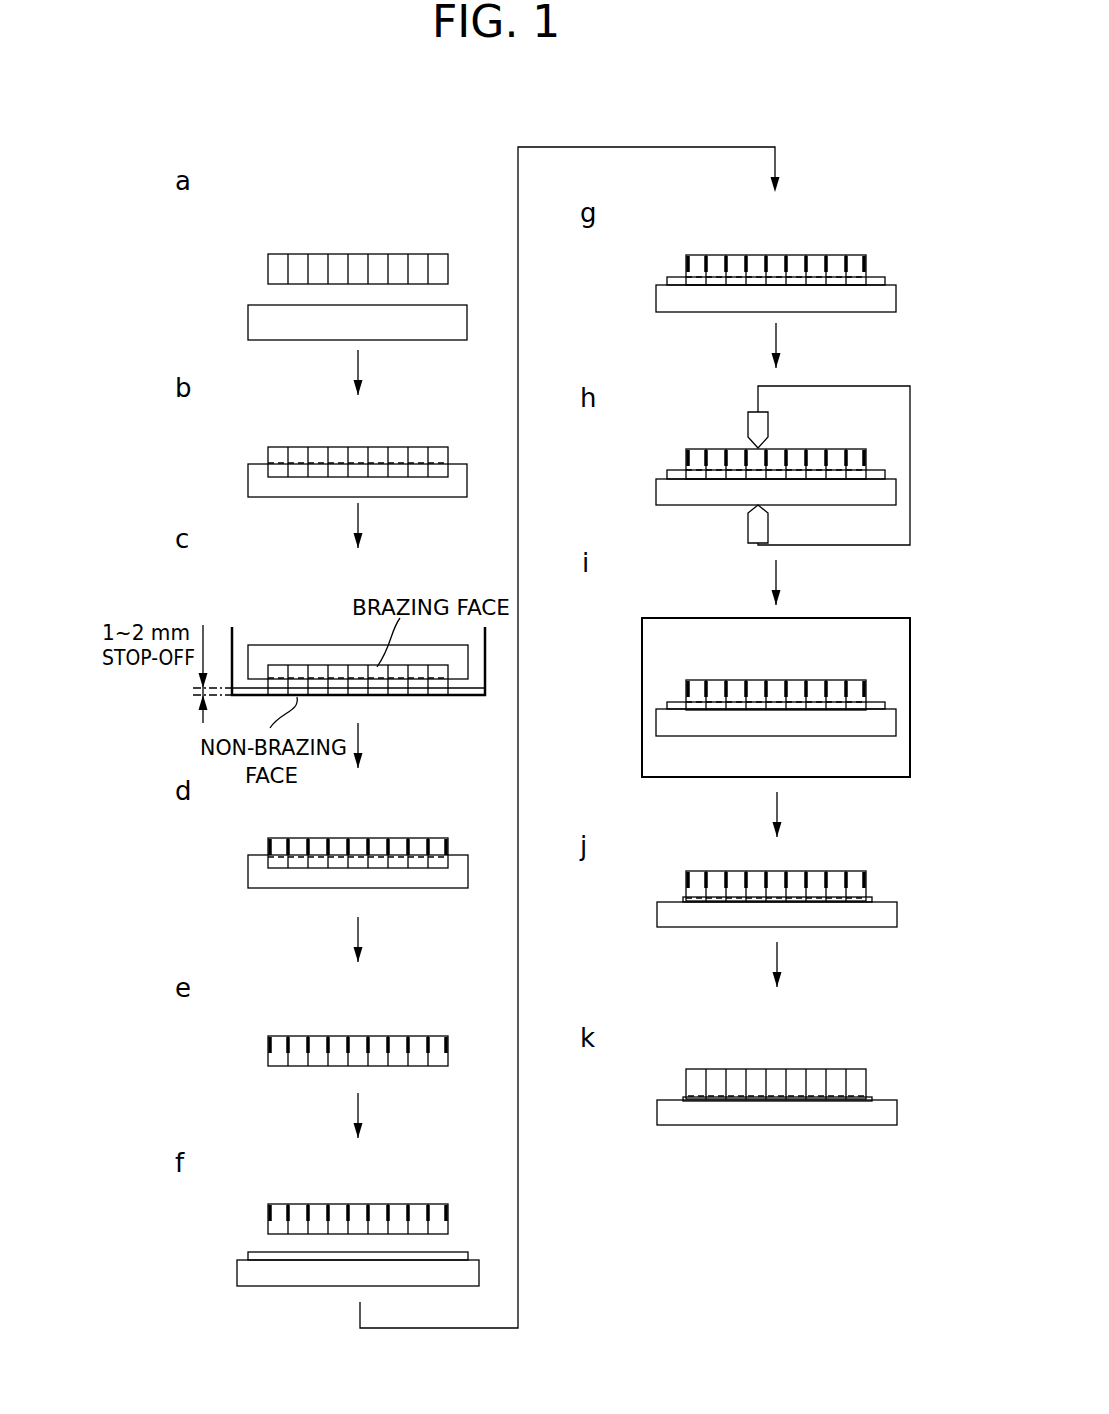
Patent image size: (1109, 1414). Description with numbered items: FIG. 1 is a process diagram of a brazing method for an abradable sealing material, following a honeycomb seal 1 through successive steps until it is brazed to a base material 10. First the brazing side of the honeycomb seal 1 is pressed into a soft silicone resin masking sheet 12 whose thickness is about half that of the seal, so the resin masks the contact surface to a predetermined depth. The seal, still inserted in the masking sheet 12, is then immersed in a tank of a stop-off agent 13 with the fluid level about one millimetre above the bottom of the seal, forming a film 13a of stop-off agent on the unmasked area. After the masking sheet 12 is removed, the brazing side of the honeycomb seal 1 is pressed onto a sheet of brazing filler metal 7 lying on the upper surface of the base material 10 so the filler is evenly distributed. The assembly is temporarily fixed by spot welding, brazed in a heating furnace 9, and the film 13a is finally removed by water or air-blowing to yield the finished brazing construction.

The honeycomb seal 1 is at (567, 712).
The brazing filler metal 7 is at (572, 741).
The heating furnace 9 is at (753, 697).
The base material 10 is at (567, 804).
The masking sheet 12 is at (365, 598).
The stop-off agent 13 is at (356, 644).
The film of stop-off agent 13a is at (570, 709).